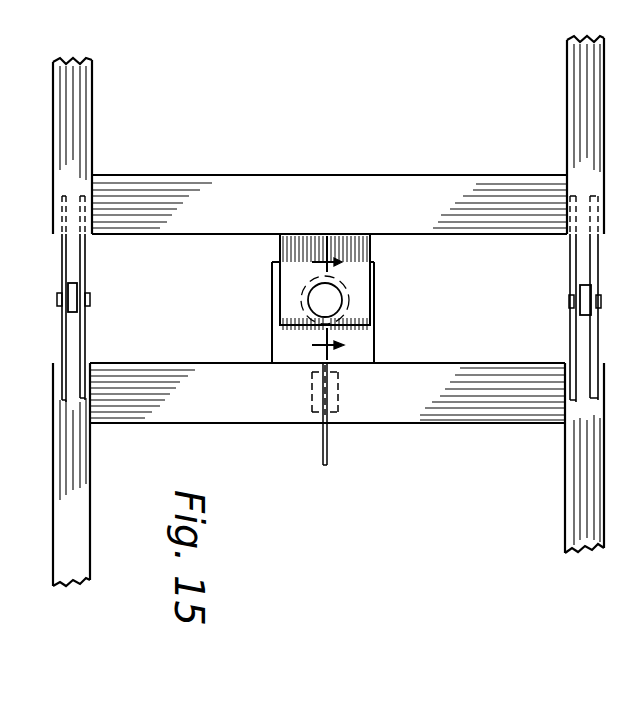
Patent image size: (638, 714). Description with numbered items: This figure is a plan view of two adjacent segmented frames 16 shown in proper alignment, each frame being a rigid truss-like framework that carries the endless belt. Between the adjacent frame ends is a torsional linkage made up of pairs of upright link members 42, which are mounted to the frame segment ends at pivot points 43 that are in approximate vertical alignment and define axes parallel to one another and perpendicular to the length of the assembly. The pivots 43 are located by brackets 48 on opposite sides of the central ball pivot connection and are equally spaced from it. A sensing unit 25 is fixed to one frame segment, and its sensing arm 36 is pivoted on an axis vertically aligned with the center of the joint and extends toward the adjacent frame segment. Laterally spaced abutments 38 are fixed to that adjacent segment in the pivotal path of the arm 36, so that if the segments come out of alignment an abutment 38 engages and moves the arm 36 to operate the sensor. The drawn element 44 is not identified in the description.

The segmented frame 16 is at (362, 178).
The sensing unit 25 is at (360, 270).
The sensing arm 36 is at (327, 465).
The abutment 38 is at (308, 400).
The upright link member 42 is at (77, 292).
The pivot point 43 is at (90, 299).
The fastener 44 is at (90, 301).
The bracket 48 is at (62, 278).